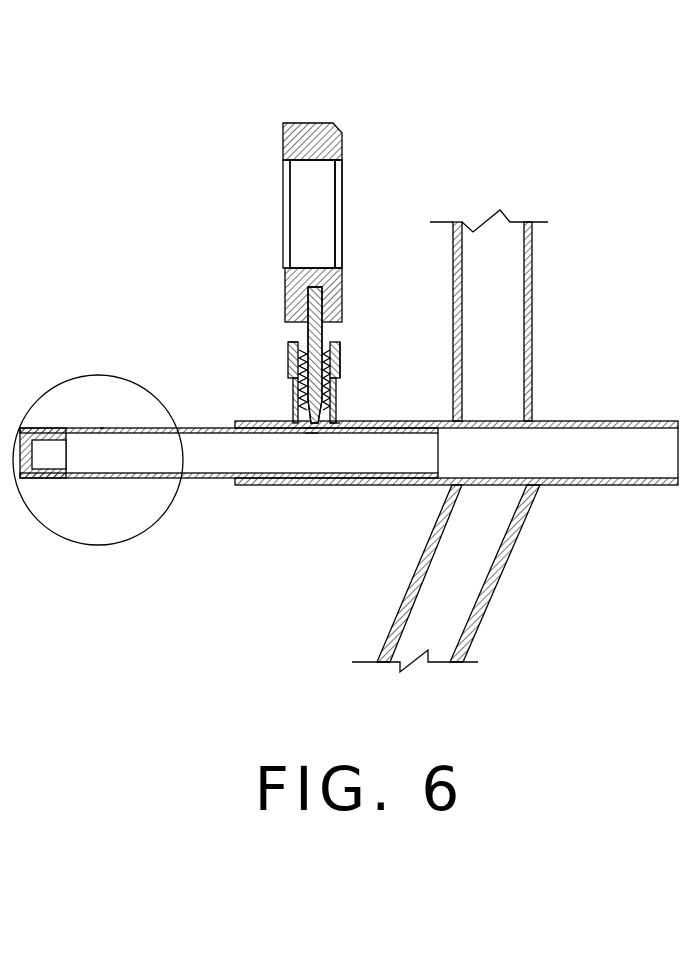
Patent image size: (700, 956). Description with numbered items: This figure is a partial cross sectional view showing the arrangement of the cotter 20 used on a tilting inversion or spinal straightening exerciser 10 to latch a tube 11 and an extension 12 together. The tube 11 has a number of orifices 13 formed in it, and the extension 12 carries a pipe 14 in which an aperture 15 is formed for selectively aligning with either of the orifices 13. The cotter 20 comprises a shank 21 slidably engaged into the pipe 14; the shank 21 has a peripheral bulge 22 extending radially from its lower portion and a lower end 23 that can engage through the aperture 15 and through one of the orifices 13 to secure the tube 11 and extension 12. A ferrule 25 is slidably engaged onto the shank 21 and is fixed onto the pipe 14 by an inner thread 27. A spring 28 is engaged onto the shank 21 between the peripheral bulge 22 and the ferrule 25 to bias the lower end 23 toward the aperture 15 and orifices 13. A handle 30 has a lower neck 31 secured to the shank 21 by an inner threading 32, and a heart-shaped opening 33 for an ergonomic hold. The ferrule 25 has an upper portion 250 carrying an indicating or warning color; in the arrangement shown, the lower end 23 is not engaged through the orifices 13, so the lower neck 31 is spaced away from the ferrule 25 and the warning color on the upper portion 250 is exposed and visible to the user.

The tilting inversion exerciser 10 is at (530, 307).
The tube 11 is at (203, 480).
The extension 12 is at (280, 485).
The orifices 13 is at (100, 428).
The pipe 14 is at (293, 400).
The aperture 15 is at (310, 432).
The cotter 20 is at (283, 127).
The shank 21 is at (323, 333).
The peripheral bulge 22 is at (340, 388).
The lower end 23 is at (312, 432).
The ferrule 25 is at (340, 350).
The inner thread 27 is at (288, 360).
The spring 28 is at (340, 377).
The handle 30 is at (347, 137).
The lower neck 31 is at (287, 300).
The inner threading 32 is at (342, 270).
The heart-shaped opening 33 is at (300, 192).
The upper portion 250 is at (293, 343).